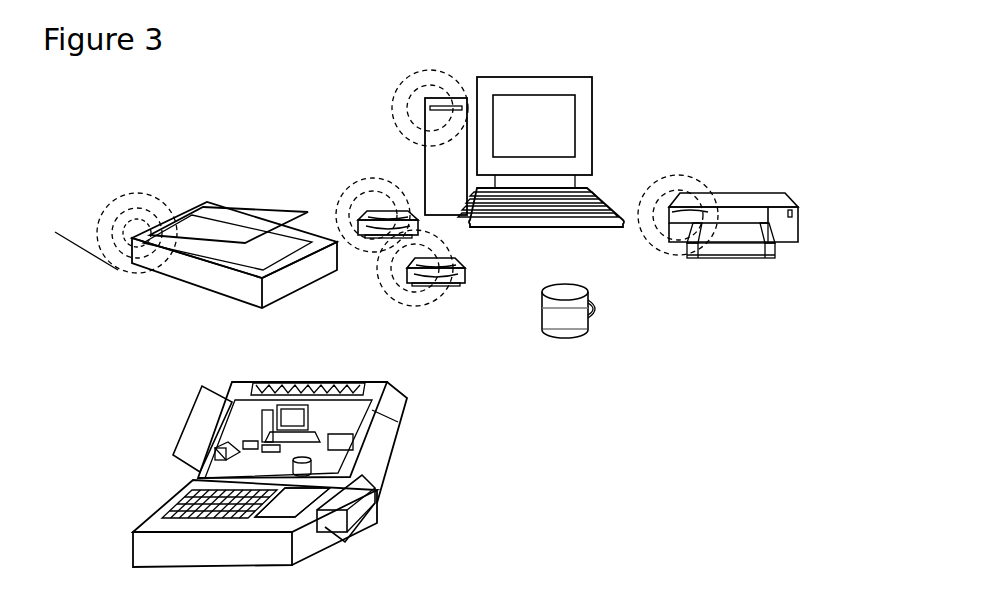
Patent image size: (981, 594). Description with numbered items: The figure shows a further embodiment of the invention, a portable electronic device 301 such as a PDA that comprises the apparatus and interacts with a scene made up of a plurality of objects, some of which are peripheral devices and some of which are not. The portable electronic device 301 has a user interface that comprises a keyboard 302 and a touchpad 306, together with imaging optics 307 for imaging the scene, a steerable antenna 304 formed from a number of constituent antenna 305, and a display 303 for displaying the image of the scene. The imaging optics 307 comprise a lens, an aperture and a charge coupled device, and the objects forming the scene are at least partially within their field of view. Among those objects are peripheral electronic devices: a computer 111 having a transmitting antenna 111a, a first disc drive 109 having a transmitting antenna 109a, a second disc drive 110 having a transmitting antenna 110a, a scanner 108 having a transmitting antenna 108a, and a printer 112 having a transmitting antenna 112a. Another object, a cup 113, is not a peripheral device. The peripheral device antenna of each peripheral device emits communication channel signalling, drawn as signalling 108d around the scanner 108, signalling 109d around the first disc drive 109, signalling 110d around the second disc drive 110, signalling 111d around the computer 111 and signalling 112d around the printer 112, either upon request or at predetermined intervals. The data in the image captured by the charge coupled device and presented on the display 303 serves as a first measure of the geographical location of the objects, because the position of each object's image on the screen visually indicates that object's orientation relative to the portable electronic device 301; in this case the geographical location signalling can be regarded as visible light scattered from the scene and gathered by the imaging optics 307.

The scanner 108 is at (227, 213).
The scanner transmitting antenna 108a is at (133, 233).
The scanner communication channel signalling 108d is at (93, 208).
The first disc drive 109 is at (380, 215).
The first disc drive transmitting antenna 109a is at (367, 212).
The first disc drive communication channel signalling 109d is at (340, 207).
The second disc drive 110 is at (457, 277).
The second disc drive transmitting antenna 110a is at (408, 263).
The second disc drive communication channel signalling 110d is at (443, 237).
The computer 111 is at (580, 100).
The computer transmitting antenna 111a is at (430, 108).
The computer communication channel signalling 111d is at (392, 102).
The printer 112 is at (768, 208).
The printer transmitting antenna 112a is at (677, 215).
The printer communication channel signalling 112d is at (700, 182).
The cup 113 is at (567, 317).
The portable electronic device 301 is at (100, 553).
The keyboard 302 is at (190, 503).
The display 303 is at (237, 422).
The steerable antenna 304 is at (258, 388).
The constituent antenna 305 is at (362, 390).
The touchpad 306 is at (300, 498).
The imaging optics 307 is at (365, 512).